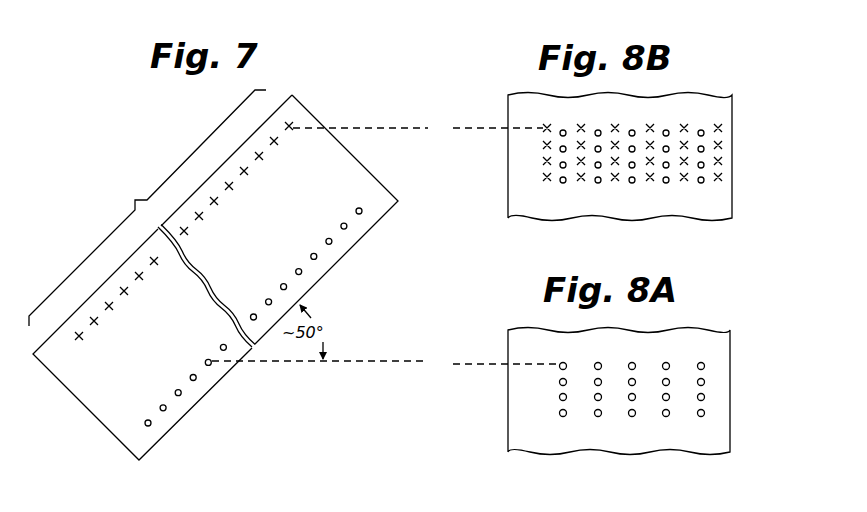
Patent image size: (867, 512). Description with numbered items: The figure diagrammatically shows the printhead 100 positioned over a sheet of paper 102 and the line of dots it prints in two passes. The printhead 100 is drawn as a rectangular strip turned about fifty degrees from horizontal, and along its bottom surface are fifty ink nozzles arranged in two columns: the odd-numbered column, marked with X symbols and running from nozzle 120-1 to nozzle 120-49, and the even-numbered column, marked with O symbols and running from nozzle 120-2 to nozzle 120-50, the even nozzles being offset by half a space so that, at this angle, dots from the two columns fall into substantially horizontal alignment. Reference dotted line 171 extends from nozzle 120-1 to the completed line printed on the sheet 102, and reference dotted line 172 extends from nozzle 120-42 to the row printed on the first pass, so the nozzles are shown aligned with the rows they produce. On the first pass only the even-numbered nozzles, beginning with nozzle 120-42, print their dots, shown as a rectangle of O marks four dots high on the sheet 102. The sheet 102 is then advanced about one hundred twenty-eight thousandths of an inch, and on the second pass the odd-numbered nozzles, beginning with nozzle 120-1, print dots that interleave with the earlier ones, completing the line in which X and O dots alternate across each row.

In FIG. 7, the printhead 100 is at (193, 407).
In FIG. 8B, the sheet of paper 102 is at (507, 100).
In FIG. 8A, the sheet of paper 102 is at (507, 338).
In FIG. 7, the ink nozzle 120-1 is at (287, 133).
In FIG. 7, the ink nozzle 120-2 is at (358, 208).
In FIG. 7, the ink nozzle 120-42 is at (208, 359).
In FIG. 7, the ink nozzle 120-49 is at (77, 341).
In FIG. 7, the ink nozzle 120-50 is at (148, 420).
In FIG. 7, the reference dotted line 171 is at (384, 127).
In FIG. 8B, the reference dotted line 171 is at (470, 130).
In FIG. 7, the reference dotted line 172 is at (279, 362).
In FIG. 8A, the reference dotted line 172 is at (470, 366).